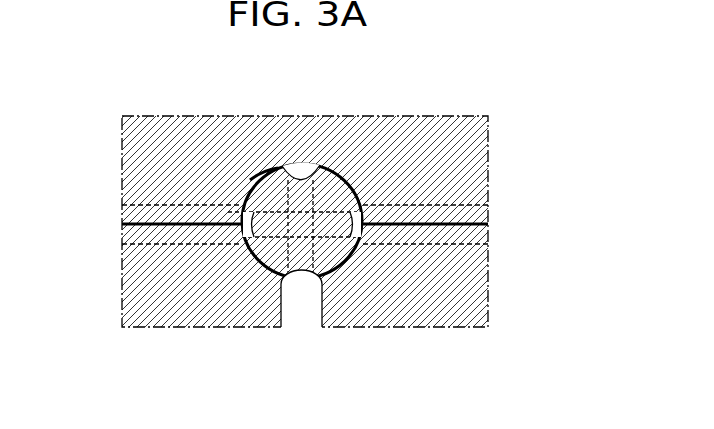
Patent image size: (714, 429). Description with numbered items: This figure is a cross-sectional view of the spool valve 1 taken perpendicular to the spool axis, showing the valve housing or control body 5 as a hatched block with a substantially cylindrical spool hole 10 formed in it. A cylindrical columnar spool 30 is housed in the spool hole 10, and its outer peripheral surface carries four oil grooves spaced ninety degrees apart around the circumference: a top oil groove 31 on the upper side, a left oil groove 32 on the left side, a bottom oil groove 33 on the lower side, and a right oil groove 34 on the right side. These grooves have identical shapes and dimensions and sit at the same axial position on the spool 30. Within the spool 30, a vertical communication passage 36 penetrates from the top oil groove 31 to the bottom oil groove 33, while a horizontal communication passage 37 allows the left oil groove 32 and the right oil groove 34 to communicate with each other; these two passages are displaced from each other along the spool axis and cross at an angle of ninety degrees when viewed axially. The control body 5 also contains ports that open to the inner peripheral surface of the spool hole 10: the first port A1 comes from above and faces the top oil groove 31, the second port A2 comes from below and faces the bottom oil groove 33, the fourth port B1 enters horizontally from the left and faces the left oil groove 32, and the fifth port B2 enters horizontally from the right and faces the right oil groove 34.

The spool valve 1 is at (509, 60).
The valve housing 5 is at (470, 142).
The spool hole 10 is at (360, 190).
The spool 30 is at (341, 163).
The top oil groove 31 is at (306, 172).
The left oil groove 32 is at (243, 217).
The bottom oil groove 33 is at (282, 288).
The right oil groove 34 is at (362, 234).
The vertical communication passage 36 is at (268, 170).
The horizontal communication passage 37 is at (252, 248).
The first port A1 is at (282, 165).
The second port A2 is at (312, 303).
The fourth port B1 is at (146, 205).
The fifth port B2 is at (458, 205).